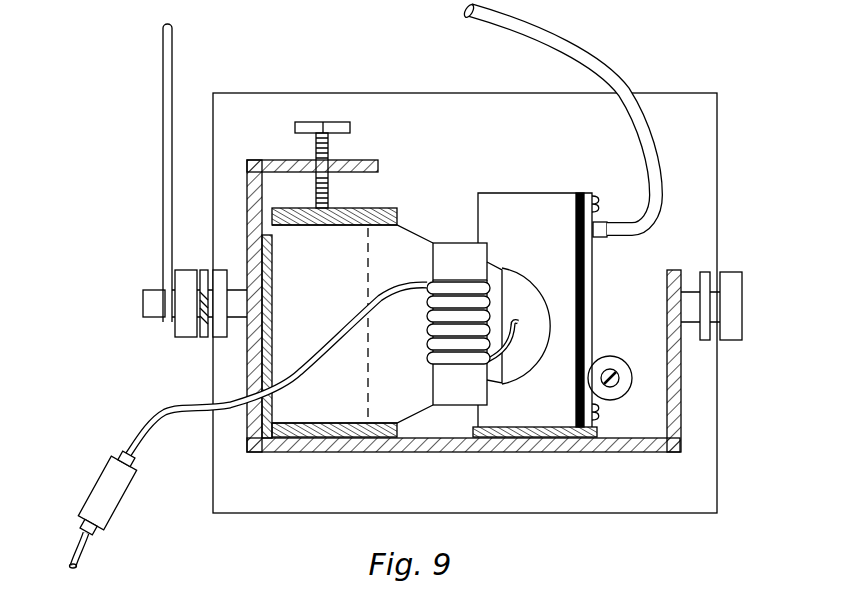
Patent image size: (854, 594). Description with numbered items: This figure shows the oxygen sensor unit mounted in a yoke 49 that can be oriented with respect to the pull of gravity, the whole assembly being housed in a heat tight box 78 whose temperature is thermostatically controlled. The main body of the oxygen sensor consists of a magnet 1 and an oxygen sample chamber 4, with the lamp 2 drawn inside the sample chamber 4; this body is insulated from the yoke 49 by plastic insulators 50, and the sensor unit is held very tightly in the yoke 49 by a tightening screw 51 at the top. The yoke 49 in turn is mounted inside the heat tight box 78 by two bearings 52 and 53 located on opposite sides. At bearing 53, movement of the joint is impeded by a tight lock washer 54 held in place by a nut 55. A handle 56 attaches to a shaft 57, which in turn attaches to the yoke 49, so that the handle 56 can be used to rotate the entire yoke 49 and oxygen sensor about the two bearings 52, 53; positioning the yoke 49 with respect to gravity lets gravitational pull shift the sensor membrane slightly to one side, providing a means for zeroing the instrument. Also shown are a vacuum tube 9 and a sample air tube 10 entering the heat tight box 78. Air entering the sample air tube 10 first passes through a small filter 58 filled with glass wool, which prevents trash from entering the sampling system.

The magnet 1 is at (343, 273).
The lamp bulb 2 is at (551, 352).
The oxygen sample chamber 4 is at (519, 246).
The vacuum tube 9 is at (562, 50).
The sample air tube 10 is at (150, 425).
The yoke 49 is at (455, 444).
The plastic insulators 50 is at (355, 214).
The tightening screw 51 is at (322, 139).
The bearing 52 is at (731, 278).
The bearing 53 is at (219, 270).
The lock washer 54 is at (204, 337).
The nut 55 is at (180, 338).
The handle 56 is at (166, 97).
The shaft 57 is at (152, 303).
The filter 58 is at (112, 496).
The heat tight box 78 is at (706, 450).